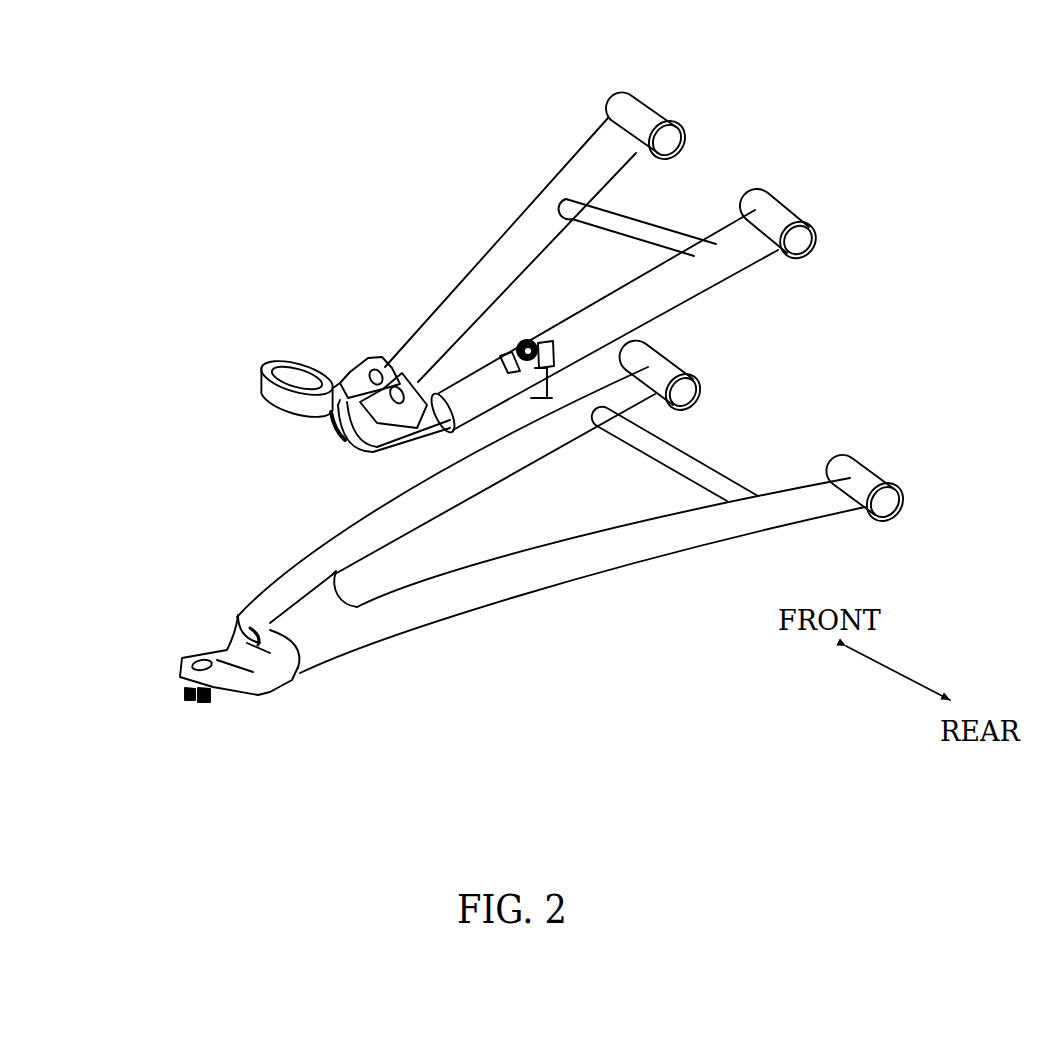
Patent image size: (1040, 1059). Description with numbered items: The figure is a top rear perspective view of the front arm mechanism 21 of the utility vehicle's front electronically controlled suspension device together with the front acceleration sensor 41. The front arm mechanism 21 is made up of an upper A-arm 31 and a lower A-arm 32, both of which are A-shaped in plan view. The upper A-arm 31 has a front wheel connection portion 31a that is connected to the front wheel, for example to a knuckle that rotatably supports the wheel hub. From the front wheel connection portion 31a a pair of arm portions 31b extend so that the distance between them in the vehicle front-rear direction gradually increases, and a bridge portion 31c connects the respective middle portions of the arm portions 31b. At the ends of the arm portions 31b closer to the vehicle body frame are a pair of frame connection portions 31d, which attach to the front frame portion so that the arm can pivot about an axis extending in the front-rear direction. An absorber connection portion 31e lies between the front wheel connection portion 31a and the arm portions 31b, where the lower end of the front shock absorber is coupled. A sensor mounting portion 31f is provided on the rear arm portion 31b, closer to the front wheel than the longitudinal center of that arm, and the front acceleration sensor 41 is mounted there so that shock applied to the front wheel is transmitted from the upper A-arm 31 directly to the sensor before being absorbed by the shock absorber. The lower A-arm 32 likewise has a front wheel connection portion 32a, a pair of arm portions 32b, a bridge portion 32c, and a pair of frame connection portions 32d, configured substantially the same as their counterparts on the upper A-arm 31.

The front arm mechanism 21 is at (228, 309).
The upper A-arm 31 is at (444, 294).
The front wheel connection portion 31a is at (267, 393).
The arm portions 31b is at (523, 207).
The bridge portion 31c is at (655, 222).
The frame connection portions 31d is at (653, 97).
The absorber connection portion 31e is at (383, 357).
The sensor mounting portion 31f is at (514, 337).
The front acceleration sensor 41 is at (554, 360).
The lower A-arm 32 is at (523, 598).
The front wheel connection portion 32a is at (226, 704).
The arm portions 32b is at (505, 475).
The bridge portion 32c is at (713, 457).
The frame connection portions 32d is at (680, 366).